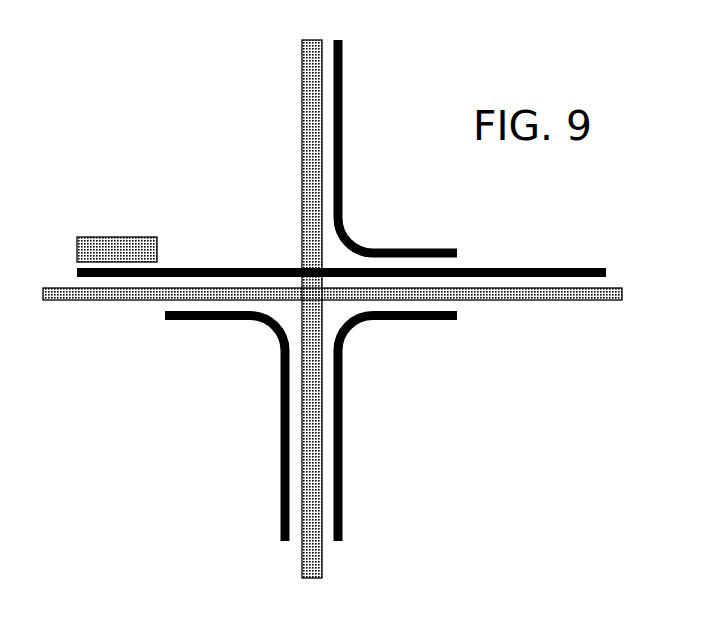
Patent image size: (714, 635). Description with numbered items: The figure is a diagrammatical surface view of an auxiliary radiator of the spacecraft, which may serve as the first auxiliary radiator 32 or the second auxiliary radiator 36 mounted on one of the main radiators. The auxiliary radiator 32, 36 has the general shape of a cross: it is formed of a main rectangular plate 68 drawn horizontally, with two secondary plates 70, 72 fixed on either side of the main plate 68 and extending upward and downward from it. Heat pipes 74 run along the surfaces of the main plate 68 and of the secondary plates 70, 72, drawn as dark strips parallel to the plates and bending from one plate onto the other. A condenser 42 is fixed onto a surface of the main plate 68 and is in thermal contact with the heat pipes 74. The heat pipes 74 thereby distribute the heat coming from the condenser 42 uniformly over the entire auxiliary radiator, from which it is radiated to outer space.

The first auxiliary radiator 32 is at (367, 287).
The second auxiliary radiator 36 is at (367, 287).
The condenser 42 is at (120, 243).
The main rectangular plate 68 is at (65, 298).
The secondary plate 70 is at (307, 85).
The secondary plate 72 is at (318, 562).
The heat pipes 74 is at (345, 88).